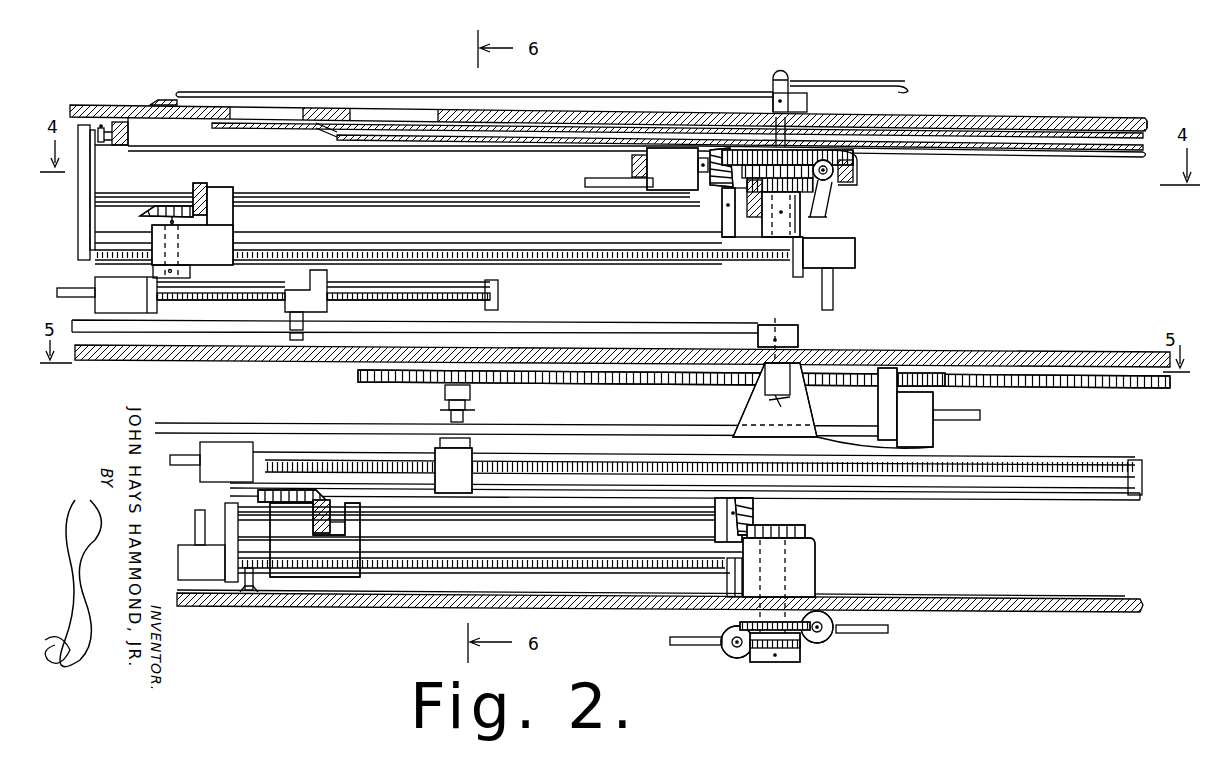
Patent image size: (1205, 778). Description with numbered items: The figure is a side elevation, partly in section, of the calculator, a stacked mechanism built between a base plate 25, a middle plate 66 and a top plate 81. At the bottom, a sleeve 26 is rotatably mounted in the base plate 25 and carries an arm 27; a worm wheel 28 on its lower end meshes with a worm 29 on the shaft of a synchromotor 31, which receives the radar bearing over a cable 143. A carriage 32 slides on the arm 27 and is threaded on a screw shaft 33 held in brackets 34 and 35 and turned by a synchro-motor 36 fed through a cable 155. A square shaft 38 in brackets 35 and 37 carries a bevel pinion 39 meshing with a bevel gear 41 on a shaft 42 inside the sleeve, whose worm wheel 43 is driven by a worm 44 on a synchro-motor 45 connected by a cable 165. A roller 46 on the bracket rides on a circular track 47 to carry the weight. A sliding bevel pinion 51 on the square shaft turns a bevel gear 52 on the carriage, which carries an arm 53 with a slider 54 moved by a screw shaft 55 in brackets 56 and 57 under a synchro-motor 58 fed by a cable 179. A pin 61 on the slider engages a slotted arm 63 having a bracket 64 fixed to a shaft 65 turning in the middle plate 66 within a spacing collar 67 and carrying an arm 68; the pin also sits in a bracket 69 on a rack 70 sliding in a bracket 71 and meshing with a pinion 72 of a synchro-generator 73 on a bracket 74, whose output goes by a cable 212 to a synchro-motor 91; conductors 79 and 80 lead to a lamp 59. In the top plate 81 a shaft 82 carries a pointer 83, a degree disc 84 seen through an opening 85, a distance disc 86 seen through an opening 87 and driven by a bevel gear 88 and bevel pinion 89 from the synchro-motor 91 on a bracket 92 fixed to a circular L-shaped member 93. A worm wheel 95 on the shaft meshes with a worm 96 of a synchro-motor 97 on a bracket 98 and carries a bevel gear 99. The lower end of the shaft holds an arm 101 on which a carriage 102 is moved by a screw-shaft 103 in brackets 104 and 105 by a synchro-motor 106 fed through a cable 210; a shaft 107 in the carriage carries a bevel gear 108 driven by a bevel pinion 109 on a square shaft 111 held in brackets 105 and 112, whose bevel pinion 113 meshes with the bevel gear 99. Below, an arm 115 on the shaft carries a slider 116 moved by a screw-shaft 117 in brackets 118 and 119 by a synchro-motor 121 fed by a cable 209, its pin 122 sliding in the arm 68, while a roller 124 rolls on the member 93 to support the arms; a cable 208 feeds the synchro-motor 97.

The base plate 25 is at (1075, 614).
The sleeve 26 is at (812, 582).
The arm 27 is at (640, 547).
The worm wheel 28 is at (738, 626).
The worm 29 is at (818, 645).
The synchromotor 31 is at (838, 650).
The carriage 32 is at (361, 530).
The screw shaft 33 is at (520, 570).
The bracket 34 is at (727, 578).
The bracket 35 is at (225, 515).
The synchro-motor 36 is at (185, 552).
The bracket 37 is at (716, 503).
The square shaft 38 is at (505, 520).
The bevel pinion 39 is at (755, 505).
The bevel gear 41 is at (805, 528).
The shaft 42 is at (814, 549).
The worm wheel 43 is at (775, 664).
The worm 44 is at (734, 661).
The synchro-motor 45 is at (722, 652).
The roller 46 is at (255, 578).
The circular track 47 is at (372, 592).
The bevel pinion 51 is at (332, 498).
The bevel gear 52 is at (256, 492).
The arm 53 is at (1003, 491).
The slider 54 is at (474, 456).
The screw shaft 55 is at (660, 463).
The bracket 56 is at (262, 452).
The bracket 57 is at (1143, 478).
The synchro-motor 58 is at (200, 450).
The lamp 59 is at (777, 70).
The pin 61 is at (438, 443).
The arm 63 is at (645, 425).
The bracket 64 is at (752, 408).
The shaft 65 is at (800, 336).
The middle plate 66 is at (1032, 353).
The spacing collar 67 is at (792, 391).
The arm 68 is at (660, 325).
The bracket 69 is at (443, 395).
The rack 70 is at (576, 384).
The bracket 71 is at (878, 412).
The pinion 72 is at (945, 385).
The synchro-generator 73 is at (926, 424).
The bracket 74 is at (934, 448).
The conductor 79 is at (890, 80).
The conductor 80 is at (160, 103).
The top plate 81 is at (1030, 113).
The shaft 82 is at (808, 99).
The pointer 83 is at (650, 91).
The circular disc 84 is at (1149, 119).
The rectangular opening 85 is at (388, 110).
The second circular disc 86 is at (1095, 158).
The second rectangular opening 87 is at (267, 110).
The bevel gear 88 is at (848, 157).
The bevel pinion 89 is at (710, 188).
The synchro-motor 91 is at (657, 182).
The bracket 92 is at (630, 165).
The circular L-shaped member 93 is at (268, 153).
The worm wheel 95 is at (792, 213).
The worm 96 is at (842, 188).
The synchro-motor 97 is at (833, 188).
The bracket 98 is at (853, 182).
The bevel gear 99 is at (808, 214).
The arm 101 is at (470, 238).
The carriage 102 is at (234, 217).
The screw-shaft 103 is at (590, 261).
The bracket 104 is at (792, 270).
The bracket 105 is at (83, 211).
The synchro-motor 106 is at (857, 252).
The shaft 107 is at (180, 247).
The bevel gear 108 is at (140, 212).
The bevel pinion 109 is at (192, 186).
The square shaft 111 is at (446, 194).
The bracket 112 is at (728, 218).
The bevel pinion 113 is at (749, 209).
The arm 115 is at (402, 285).
The slider 116 is at (312, 277).
The screw-shaft 117 is at (400, 300).
The bracket 118 is at (500, 292).
The bracket 119 is at (158, 308).
The synchro-motor 121 is at (98, 283).
The pin 122 is at (290, 318).
The roller 124 is at (130, 132).
The cable 143 is at (890, 632).
The cable 155 is at (194, 520).
The cable 165 is at (668, 643).
The cable 179 is at (186, 466).
The cable 208 is at (77, 298).
The cable 209 is at (822, 218).
The cable 210 is at (835, 291).
The cable 212 is at (583, 182).